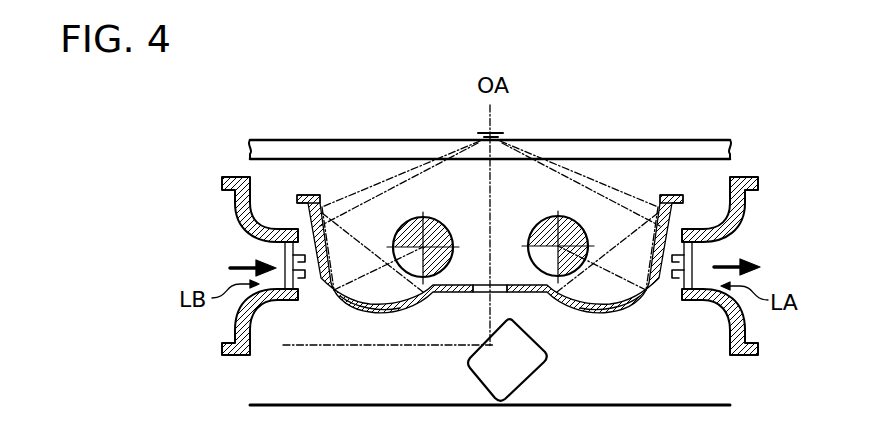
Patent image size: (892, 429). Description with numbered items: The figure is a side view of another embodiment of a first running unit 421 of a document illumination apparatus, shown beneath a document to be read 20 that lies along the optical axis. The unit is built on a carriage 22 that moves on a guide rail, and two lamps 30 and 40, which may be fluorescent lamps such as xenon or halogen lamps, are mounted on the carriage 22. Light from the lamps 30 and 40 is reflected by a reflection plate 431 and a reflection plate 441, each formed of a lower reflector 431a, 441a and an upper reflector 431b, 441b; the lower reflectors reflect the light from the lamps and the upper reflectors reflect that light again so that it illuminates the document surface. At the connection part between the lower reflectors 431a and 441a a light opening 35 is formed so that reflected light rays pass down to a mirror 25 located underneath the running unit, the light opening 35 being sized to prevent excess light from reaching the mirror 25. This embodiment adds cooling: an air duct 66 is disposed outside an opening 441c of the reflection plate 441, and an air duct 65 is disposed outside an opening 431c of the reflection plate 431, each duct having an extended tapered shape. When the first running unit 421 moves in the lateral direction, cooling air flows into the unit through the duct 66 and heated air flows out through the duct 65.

The cover plate 20 is at (607, 140).
The first running unit 421 is at (664, 112).
The reflection plate 441 is at (331, 250).
The bottom wall of left housing half 441a is at (387, 313).
The upper flange of left housing half 441b is at (310, 193).
The opening 441c is at (284, 265).
The reflection plate 431 is at (650, 243).
The bottom wall of right housing half 431a is at (607, 316).
The upper flange of right housing half 431b is at (672, 193).
The opening 431c is at (696, 262).
The light opening 35 is at (497, 285).
The lamp 40 is at (438, 220).
The lamp 30 is at (538, 220).
The mirror 25 is at (537, 380).
The air duct 66 is at (232, 358).
The air duct 65 is at (747, 358).
The carriage 22 is at (273, 404).